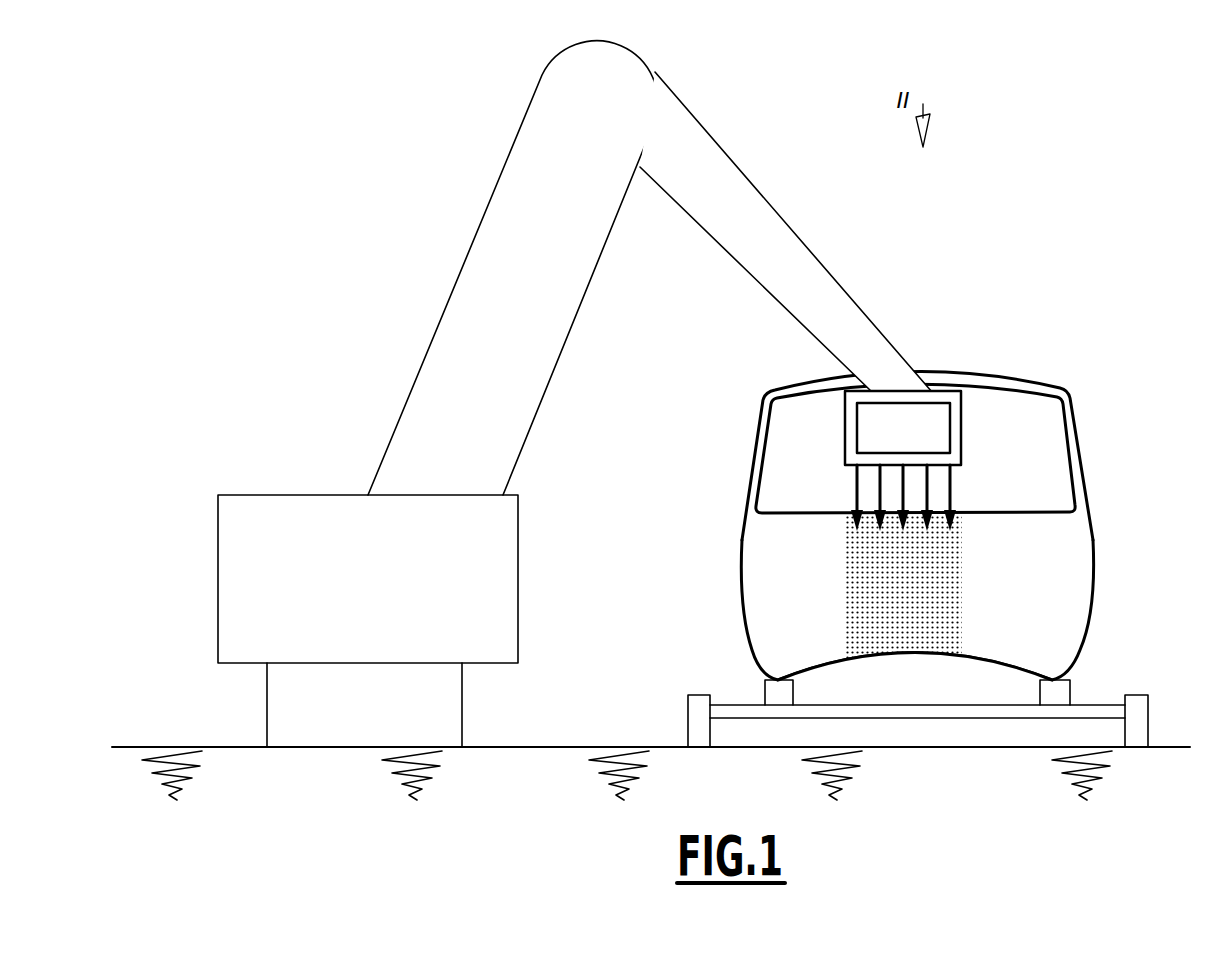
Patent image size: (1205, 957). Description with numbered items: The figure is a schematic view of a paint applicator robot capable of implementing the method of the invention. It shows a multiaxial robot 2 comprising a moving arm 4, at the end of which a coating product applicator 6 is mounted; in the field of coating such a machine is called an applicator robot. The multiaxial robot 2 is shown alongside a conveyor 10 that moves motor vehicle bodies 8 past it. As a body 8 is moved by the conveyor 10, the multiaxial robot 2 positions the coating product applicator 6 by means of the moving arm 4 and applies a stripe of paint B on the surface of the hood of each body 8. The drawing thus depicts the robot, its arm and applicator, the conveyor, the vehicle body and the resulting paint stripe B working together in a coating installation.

The multiaxial robot 2 is at (360, 413).
The moving arm 4 is at (758, 247).
The coating product applicator 6 is at (961, 391).
The motor vehicle body 8 is at (1083, 454).
The conveyor 10 is at (732, 708).
The stripe of paint B is at (900, 605).